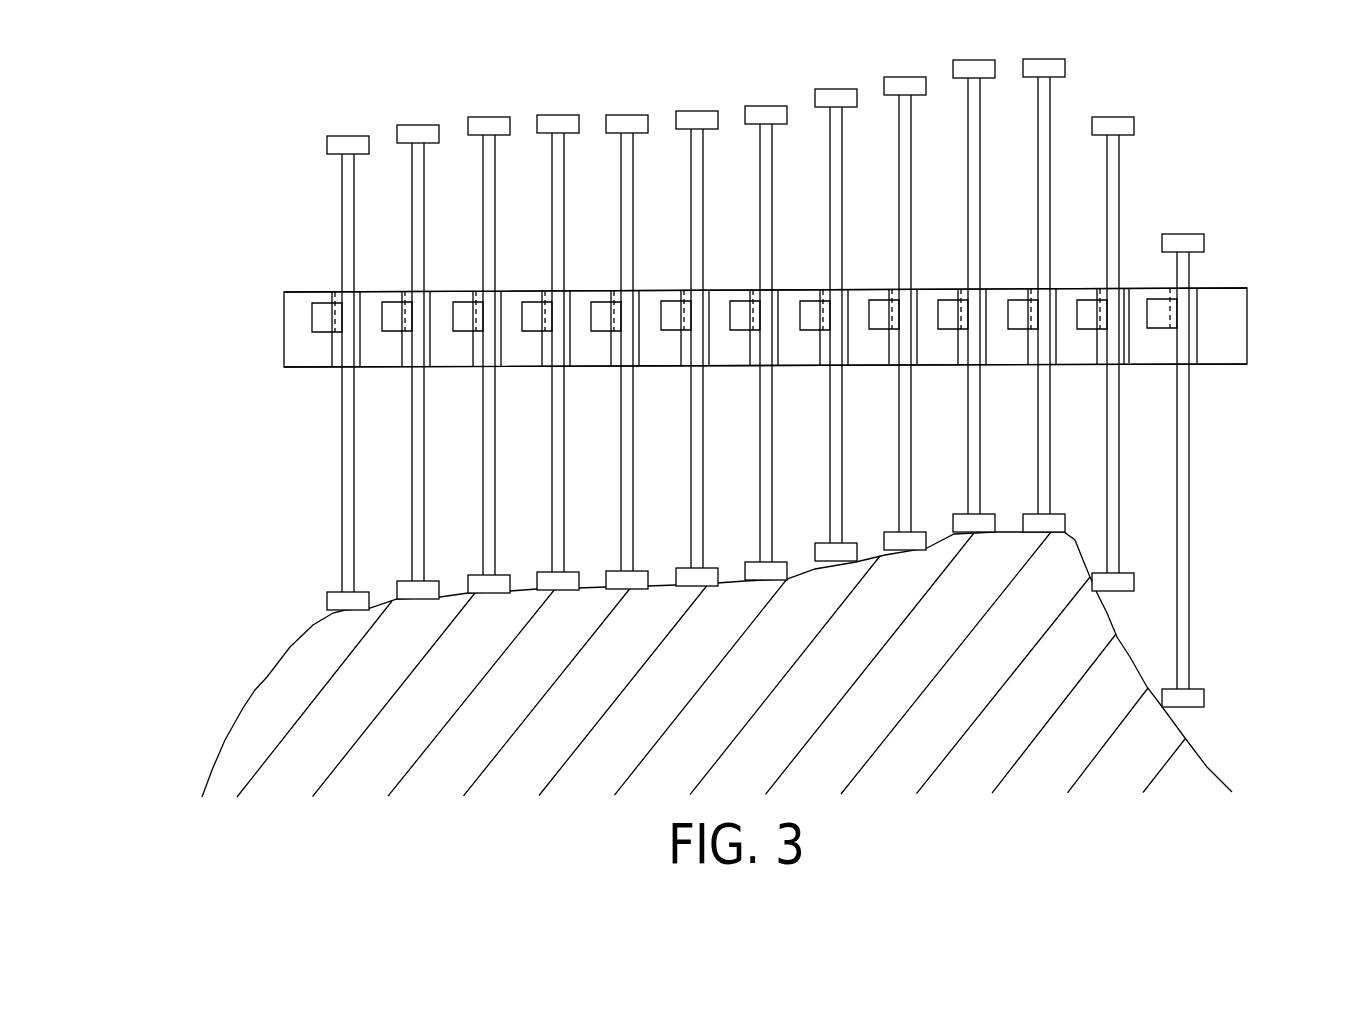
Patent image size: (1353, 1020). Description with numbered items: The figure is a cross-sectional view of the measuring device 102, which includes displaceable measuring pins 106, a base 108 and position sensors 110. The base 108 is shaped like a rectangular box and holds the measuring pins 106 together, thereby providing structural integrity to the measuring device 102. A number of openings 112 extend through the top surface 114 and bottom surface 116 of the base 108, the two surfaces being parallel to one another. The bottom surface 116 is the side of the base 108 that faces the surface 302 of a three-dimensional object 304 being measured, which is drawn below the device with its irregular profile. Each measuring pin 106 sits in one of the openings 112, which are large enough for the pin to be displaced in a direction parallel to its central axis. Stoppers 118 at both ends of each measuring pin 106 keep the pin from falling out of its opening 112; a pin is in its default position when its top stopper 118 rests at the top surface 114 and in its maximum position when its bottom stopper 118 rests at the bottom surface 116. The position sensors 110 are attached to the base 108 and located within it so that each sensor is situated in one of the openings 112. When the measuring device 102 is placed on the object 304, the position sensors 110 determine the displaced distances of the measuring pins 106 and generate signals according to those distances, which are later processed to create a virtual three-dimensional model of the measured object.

The measuring device 102 is at (193, 85).
The displaceable measuring pin 106 is at (342, 178).
The base 108 is at (1248, 322).
The position sensor 110 is at (322, 333).
The opening 112 is at (360, 292).
The top surface 114 is at (1238, 288).
The bottom surface 116 is at (1230, 366).
The stopper 118 is at (329, 137).
The surface 302 is at (246, 706).
The three-dimensional object 304 is at (752, 704).